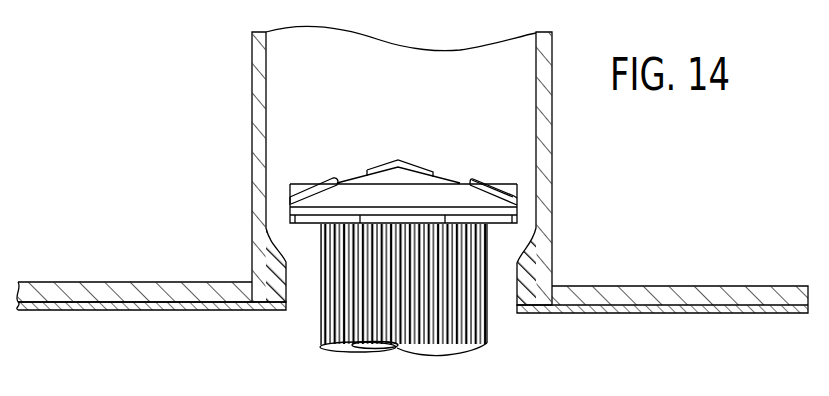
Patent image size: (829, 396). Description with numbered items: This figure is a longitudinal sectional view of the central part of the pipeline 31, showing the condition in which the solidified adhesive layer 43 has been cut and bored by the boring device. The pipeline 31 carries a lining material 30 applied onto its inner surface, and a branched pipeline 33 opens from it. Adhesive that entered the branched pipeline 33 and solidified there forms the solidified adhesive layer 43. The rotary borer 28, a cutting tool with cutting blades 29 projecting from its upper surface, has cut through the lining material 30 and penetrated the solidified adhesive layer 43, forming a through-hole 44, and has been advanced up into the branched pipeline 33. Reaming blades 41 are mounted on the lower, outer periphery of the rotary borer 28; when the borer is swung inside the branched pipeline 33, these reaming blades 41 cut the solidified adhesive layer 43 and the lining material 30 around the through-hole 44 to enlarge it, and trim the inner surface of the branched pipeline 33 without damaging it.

The rotary borer 28 is at (458, 155).
The cutting blades 29 is at (493, 191).
The lining material 30 is at (148, 300).
The pipeline 31 is at (85, 291).
The branched pipeline 33 is at (255, 104).
The reaming blades 41 is at (513, 221).
The solidified adhesive layer 43 is at (572, 168).
The through-hole 44 is at (507, 303).